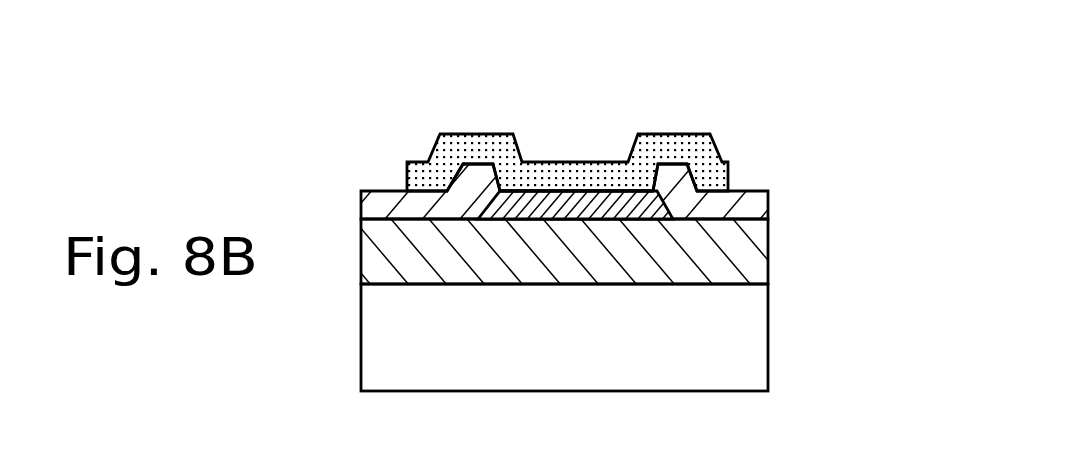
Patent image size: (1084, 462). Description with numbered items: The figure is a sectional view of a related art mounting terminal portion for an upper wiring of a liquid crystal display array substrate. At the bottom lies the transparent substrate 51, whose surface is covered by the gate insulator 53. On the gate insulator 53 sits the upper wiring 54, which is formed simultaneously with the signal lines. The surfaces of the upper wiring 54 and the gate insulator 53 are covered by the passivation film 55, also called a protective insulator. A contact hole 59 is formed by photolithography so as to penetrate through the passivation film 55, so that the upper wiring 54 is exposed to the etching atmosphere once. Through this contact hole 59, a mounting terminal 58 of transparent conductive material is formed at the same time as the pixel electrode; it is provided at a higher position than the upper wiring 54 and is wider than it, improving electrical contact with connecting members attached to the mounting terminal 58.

The transparent substrate 51 is at (738, 373).
The gate insulator 53 is at (470, 255).
The upper wiring 54 is at (585, 225).
The passivation film 55 is at (382, 200).
The mounting terminal 58 is at (677, 150).
The contact hole 59 is at (555, 184).